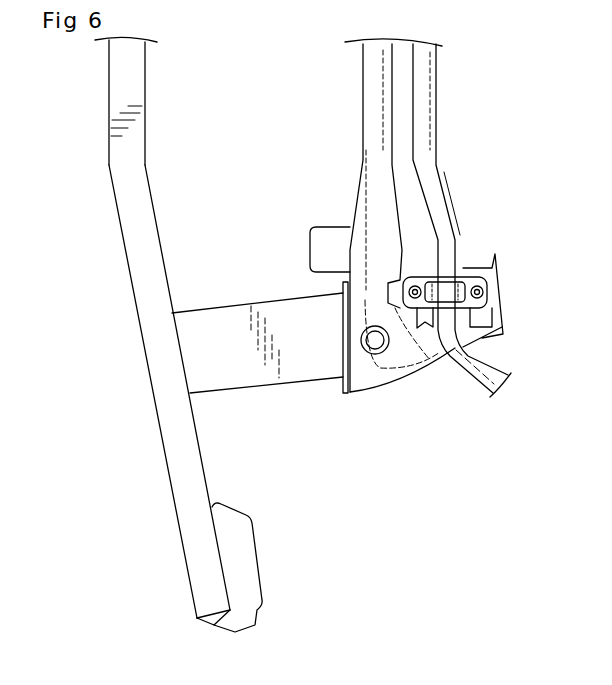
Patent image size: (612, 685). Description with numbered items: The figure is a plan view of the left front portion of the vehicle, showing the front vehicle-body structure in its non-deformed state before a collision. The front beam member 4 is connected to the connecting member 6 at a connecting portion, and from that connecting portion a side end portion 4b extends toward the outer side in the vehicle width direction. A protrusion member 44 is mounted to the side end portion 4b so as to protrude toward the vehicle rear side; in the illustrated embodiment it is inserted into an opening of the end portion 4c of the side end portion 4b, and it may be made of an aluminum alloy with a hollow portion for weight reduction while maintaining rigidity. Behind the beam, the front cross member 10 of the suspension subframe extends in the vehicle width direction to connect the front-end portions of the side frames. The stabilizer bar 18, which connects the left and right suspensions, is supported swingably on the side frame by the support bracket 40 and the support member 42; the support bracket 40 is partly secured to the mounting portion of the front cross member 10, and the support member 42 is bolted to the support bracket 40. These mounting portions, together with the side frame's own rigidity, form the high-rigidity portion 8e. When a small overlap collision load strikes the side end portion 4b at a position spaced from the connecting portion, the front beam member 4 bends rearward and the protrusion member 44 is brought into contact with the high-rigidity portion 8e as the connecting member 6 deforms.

The front beam member 4 is at (109, 99).
The side end portion 4b is at (157, 423).
The end portion 4c is at (212, 619).
The protrusion member 44 is at (255, 550).
The connecting member 6 is at (242, 312).
The front cross member 10 is at (363, 100).
The stabilizer bar 18 is at (436, 87).
The support bracket 40 is at (482, 262).
The support member 42 is at (466, 268).
The high-rigidity portion 8e is at (420, 378).